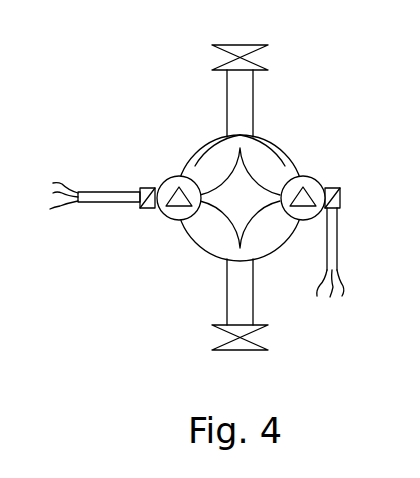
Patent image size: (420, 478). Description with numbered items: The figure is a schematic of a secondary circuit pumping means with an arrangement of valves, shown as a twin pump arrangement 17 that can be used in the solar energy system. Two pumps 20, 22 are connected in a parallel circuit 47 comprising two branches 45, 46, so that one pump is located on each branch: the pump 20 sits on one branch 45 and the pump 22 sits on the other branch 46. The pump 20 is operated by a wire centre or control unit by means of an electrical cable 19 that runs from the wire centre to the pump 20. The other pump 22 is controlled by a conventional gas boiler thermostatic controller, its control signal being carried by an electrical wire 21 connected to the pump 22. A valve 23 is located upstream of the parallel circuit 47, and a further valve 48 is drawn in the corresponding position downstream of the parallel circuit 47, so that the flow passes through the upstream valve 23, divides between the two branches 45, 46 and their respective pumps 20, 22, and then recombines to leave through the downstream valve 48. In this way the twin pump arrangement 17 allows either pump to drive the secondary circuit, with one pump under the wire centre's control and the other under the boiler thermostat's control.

The twin pump arrangement 17 is at (333, 328).
The electrical cable 19 is at (88, 192).
The pump 20 is at (160, 178).
The electrical wire 21 is at (338, 238).
The pump 22 is at (318, 177).
The valve 23 is at (222, 45).
The branch 45 is at (204, 139).
The branch 46 is at (276, 141).
The parallel circuit 47 is at (163, 255).
The lower valve 48 is at (213, 324).